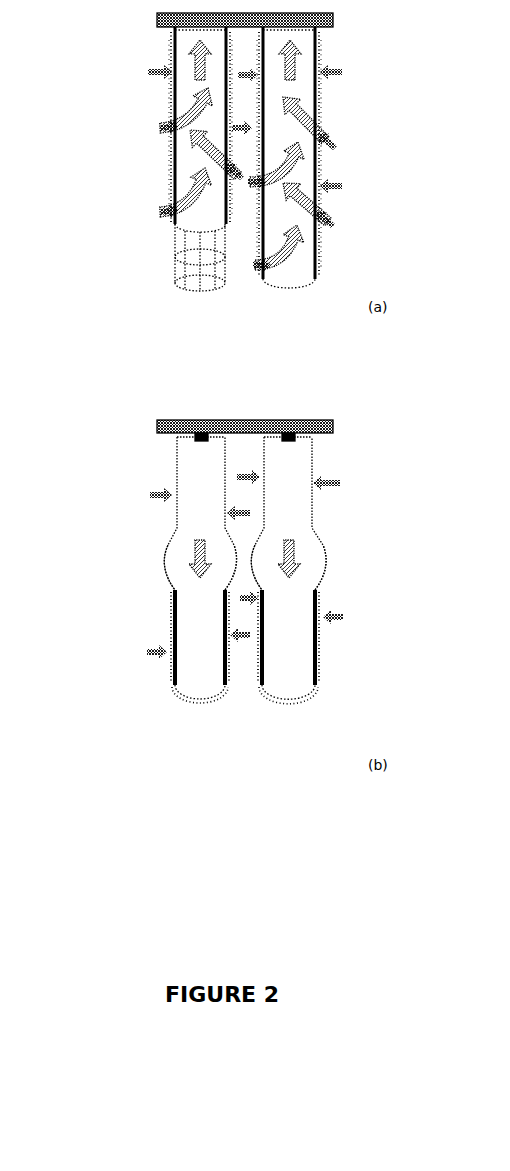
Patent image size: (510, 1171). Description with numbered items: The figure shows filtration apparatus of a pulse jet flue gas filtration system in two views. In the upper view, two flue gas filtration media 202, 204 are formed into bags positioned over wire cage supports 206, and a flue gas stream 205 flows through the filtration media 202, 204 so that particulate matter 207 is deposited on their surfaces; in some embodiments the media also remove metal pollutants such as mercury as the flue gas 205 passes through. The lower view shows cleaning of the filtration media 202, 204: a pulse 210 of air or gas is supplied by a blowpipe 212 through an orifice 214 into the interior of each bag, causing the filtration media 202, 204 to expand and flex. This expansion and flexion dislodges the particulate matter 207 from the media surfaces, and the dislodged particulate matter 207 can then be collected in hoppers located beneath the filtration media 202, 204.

The flue gas filtration media 202 is at (131, 92).
The flue gas filtration media 204 is at (360, 97).
The flue gas stream 205 is at (160, 215).
The wire cage support 206 is at (186, 285).
The particulate matter 207 is at (174, 163).
The pulse 210 is at (162, 560).
The blowpipe 212 is at (289, 420).
The orifice 214 is at (197, 432).